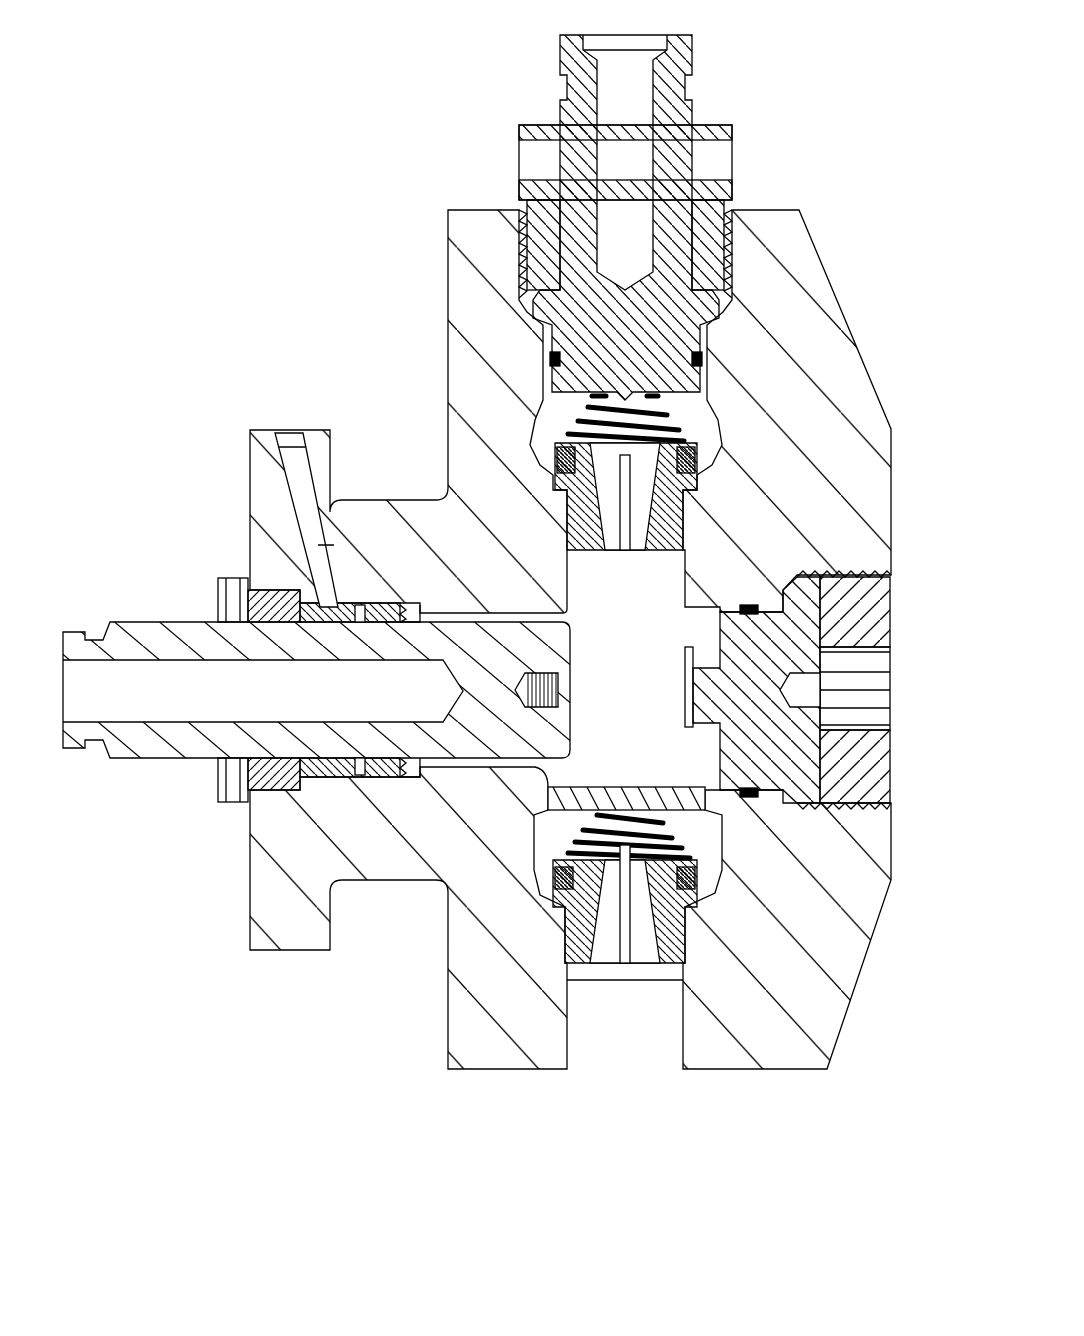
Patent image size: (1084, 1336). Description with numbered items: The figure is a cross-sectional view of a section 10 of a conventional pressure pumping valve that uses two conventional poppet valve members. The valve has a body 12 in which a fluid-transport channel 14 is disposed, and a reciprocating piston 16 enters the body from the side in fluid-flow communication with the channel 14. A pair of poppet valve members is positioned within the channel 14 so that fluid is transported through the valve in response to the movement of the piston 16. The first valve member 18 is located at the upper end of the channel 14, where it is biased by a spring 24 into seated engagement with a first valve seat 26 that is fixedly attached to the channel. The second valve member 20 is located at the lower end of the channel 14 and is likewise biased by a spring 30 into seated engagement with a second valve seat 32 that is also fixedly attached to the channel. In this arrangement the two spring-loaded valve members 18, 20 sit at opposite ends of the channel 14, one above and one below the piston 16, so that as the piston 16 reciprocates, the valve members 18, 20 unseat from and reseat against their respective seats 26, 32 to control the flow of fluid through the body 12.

The section of pump valve 10 is at (878, 126).
The body 12 is at (835, 399).
The fluid-transport channel 14 is at (635, 715).
The reciprocating piston 16 is at (192, 628).
The first valve member 18 is at (552, 442).
The second valve member 20 is at (690, 878).
The spring 24 is at (648, 406).
The first valve seat 26 is at (555, 486).
The spring 30 is at (600, 813).
The second valve seat 32 is at (560, 883).